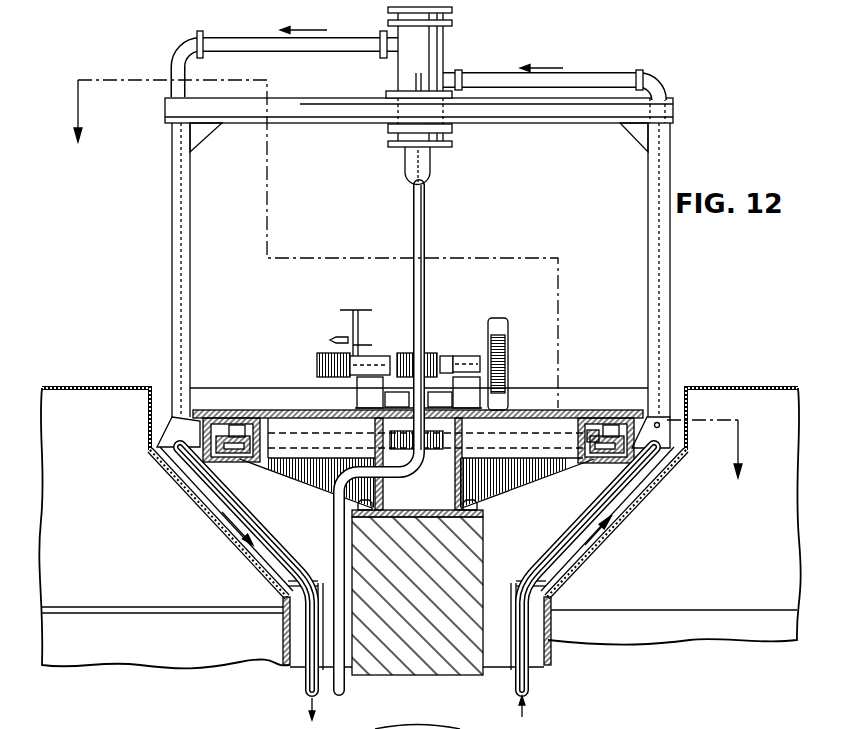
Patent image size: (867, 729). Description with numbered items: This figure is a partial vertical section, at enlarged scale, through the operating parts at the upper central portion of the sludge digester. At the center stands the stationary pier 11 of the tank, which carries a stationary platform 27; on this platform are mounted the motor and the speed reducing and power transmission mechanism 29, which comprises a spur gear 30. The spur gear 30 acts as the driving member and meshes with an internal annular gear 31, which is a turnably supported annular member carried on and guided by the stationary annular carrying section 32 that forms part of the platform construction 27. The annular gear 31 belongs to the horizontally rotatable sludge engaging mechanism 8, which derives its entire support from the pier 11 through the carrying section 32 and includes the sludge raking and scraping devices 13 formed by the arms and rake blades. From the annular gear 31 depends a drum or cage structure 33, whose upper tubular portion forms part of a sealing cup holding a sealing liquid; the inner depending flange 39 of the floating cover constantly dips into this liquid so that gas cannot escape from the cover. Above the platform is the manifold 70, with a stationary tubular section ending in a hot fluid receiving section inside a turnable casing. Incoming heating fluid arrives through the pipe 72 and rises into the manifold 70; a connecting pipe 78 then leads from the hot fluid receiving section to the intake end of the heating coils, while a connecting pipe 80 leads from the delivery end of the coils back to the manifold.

The rotatable sludge engaging mechanism 8 is at (502, 678).
The pier 11 is at (463, 557).
The sludge raking and scraping devices 13 is at (406, 294).
The stationary platform 27 is at (270, 414).
The speed reducing and power transmission mechanism 29 is at (455, 355).
The spur gear 30 is at (438, 450).
The internal annular gear 31 is at (592, 437).
The stationary annular carrying section 32 is at (244, 462).
The drum or cage structure 33 is at (515, 620).
The inner depending flange 39 is at (600, 540).
The manifold 70 is at (427, 43).
The pipe 72 is at (427, 229).
The connecting pipe 78 is at (201, 39).
The connecting pipe 80 is at (658, 83).